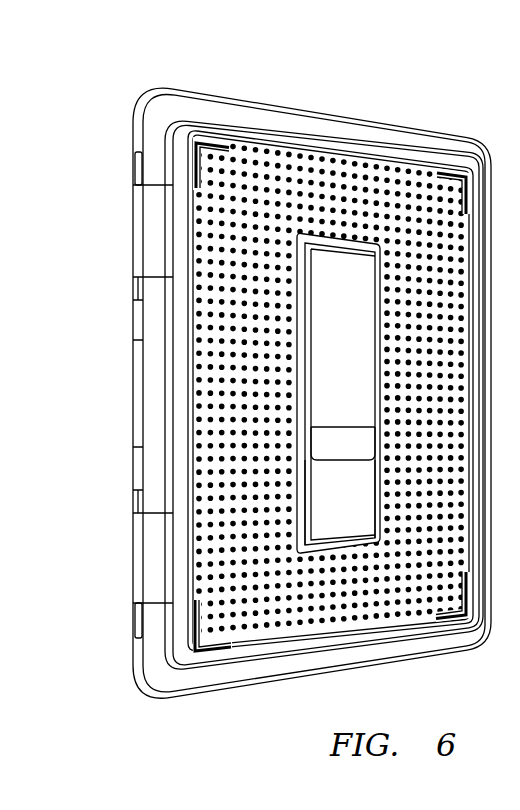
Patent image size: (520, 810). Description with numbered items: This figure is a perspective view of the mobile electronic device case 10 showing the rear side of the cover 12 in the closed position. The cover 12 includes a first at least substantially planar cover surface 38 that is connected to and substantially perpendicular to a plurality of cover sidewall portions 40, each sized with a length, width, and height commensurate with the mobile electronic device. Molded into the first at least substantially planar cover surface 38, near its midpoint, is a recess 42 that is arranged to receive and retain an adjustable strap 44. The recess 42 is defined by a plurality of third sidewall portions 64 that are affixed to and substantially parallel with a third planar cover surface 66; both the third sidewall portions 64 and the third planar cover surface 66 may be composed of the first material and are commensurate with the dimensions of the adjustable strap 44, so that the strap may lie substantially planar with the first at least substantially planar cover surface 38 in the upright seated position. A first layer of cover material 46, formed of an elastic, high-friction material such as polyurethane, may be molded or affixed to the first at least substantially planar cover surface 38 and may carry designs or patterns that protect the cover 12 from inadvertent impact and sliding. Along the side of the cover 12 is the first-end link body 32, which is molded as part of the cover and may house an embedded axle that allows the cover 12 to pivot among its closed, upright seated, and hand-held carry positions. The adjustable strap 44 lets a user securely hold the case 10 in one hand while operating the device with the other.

The mobile electronic device case 10 is at (224, 66).
The cover 12 is at (353, 138).
The first-end link body 32 is at (133, 384).
The first at least substantially planar cover surface 38 is at (272, 139).
The cover sidewall portions 40 is at (131, 116).
The recess 42 is at (357, 239).
The adjustable strap 44 is at (329, 360).
The first layer of cover material 46 is at (180, 210).
The third sidewall portions 64 is at (298, 452).
The third planar cover surface 66 is at (297, 551).